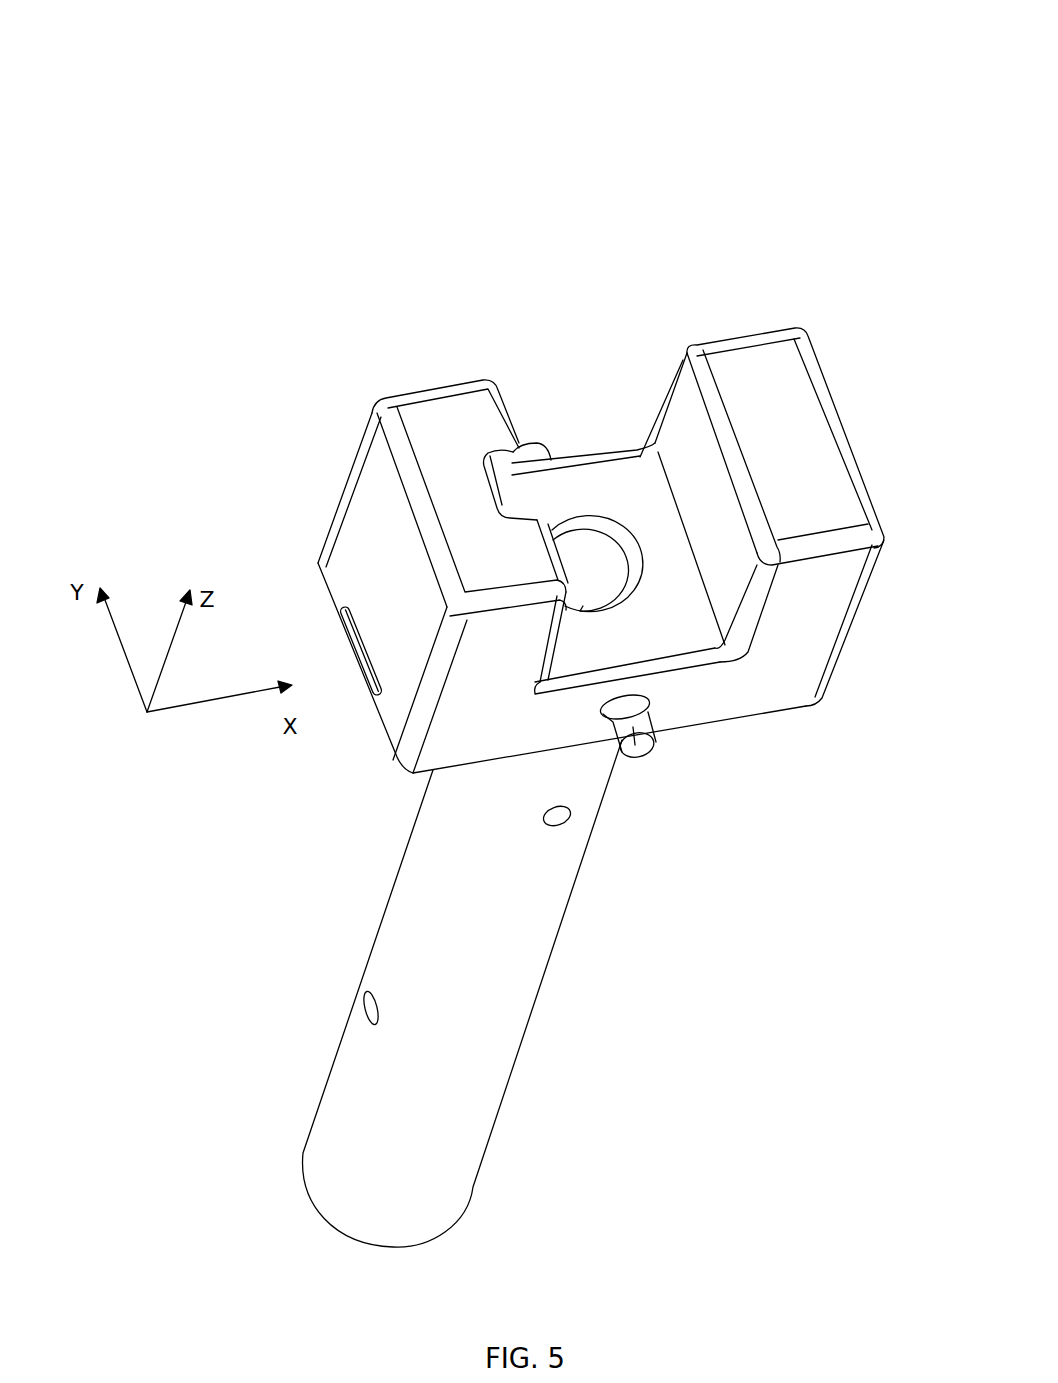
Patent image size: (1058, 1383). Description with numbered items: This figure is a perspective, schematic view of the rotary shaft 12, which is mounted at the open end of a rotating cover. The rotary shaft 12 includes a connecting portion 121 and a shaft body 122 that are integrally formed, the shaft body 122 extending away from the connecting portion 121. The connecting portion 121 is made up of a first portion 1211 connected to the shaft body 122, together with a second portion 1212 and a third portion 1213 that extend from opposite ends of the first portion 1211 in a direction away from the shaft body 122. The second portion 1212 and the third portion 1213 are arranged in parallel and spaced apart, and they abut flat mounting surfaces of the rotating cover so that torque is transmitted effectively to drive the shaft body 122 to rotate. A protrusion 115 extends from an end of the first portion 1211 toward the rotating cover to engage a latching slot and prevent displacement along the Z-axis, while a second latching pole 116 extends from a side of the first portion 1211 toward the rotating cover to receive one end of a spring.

The rotary shaft 12 is at (497, 36).
The connecting portion 121 is at (775, 203).
The first portion 1211 is at (583, 485).
The second portion 1212 is at (453, 433).
The third portion 1213 is at (768, 380).
The shaft body 122 is at (477, 970).
The protrusion 115 is at (647, 742).
The second latching pole 116 is at (370, 700).